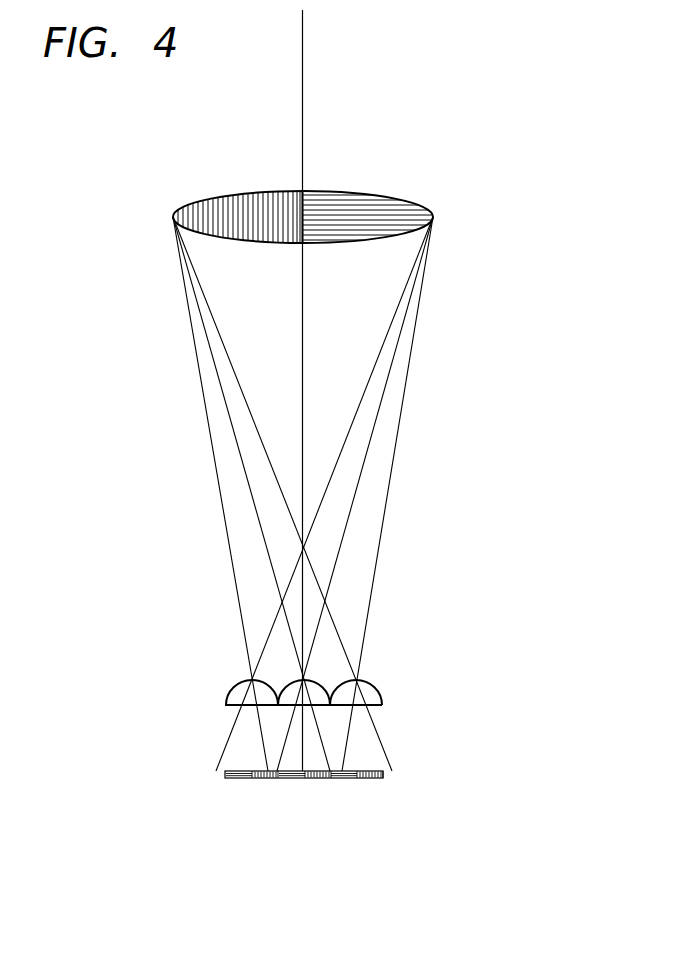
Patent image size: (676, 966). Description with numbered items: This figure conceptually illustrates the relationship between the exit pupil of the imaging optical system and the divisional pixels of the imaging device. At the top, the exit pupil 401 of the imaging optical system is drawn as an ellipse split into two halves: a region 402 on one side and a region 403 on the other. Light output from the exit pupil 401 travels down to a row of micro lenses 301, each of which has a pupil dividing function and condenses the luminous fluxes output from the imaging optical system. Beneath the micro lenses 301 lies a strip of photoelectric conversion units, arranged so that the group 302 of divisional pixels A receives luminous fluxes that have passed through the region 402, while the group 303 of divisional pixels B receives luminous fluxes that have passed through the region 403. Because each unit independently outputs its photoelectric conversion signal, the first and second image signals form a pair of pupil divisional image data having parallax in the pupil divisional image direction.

The exit pupil 401 is at (292, 185).
The region 402 is at (202, 214).
The region 403 is at (390, 208).
The micro lens 301 is at (370, 689).
The photoelectric conversion unit 302 is at (237, 780).
The photoelectric conversion unit 303 is at (260, 780).